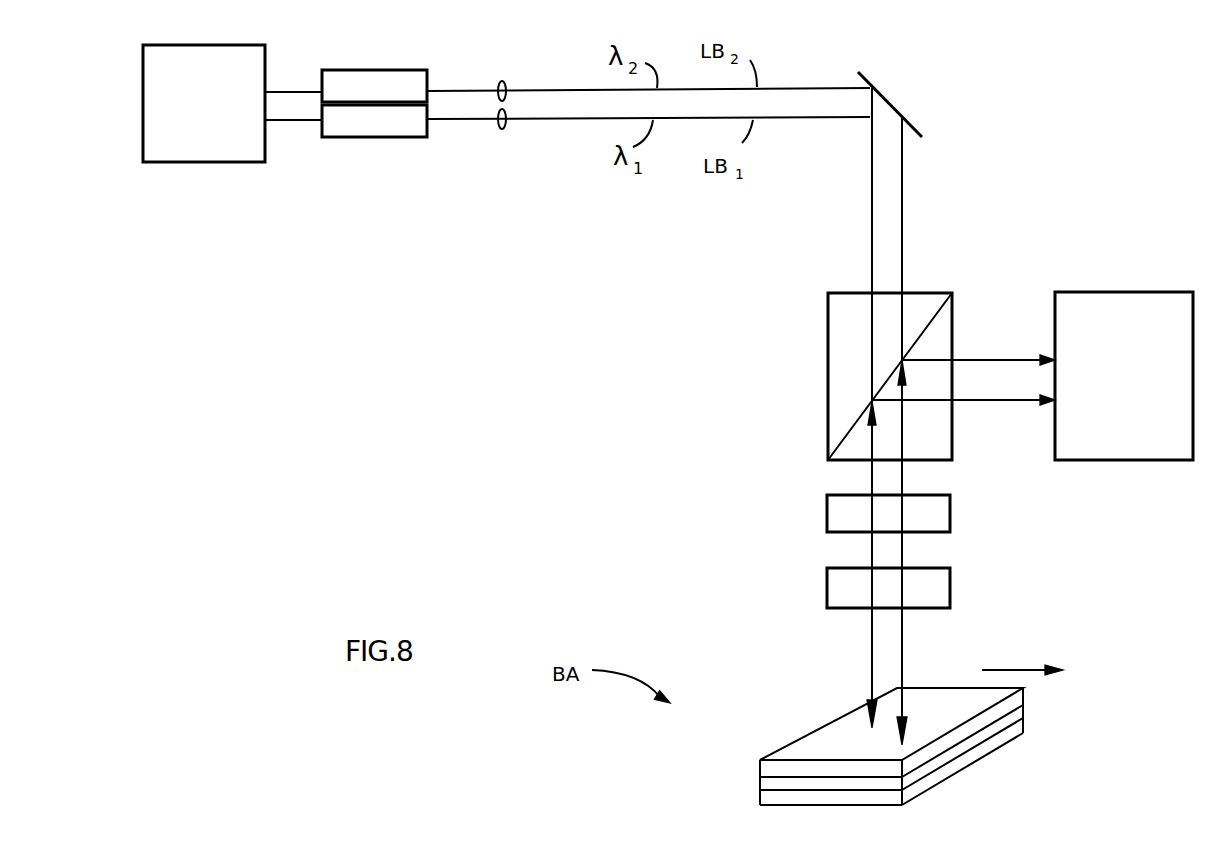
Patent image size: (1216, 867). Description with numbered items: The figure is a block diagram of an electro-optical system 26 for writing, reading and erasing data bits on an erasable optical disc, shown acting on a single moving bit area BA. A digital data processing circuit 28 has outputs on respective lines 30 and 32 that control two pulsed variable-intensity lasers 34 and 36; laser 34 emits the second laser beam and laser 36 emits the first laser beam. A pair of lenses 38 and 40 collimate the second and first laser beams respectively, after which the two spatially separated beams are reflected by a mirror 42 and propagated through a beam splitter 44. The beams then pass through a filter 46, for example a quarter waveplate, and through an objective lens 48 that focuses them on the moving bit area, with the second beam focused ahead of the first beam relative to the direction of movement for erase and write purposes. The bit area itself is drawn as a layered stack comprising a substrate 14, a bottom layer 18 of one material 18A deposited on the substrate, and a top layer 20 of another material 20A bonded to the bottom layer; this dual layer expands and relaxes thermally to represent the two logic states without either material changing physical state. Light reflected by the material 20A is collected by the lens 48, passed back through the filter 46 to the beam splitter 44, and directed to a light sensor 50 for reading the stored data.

The substrate 14 is at (760, 797).
The bottom layer 18 is at (760, 783).
The material of the bottom layer 18A is at (885, 782).
The top layer 20 is at (818, 737).
The material of the top layer 20A is at (888, 767).
The electro-optical system 26 is at (458, 279).
The digital data processing circuit 28 is at (143, 55).
The line 30 is at (303, 92).
The line 32 is at (293, 120).
The pulsed variable-intensity laser 34 is at (383, 70).
The pulsed variable-intensity laser 36 is at (385, 137).
The lens 38 is at (505, 82).
The lens 40 is at (505, 127).
The mirror 42 is at (890, 102).
The beam splitter 44 is at (828, 373).
The filter 46 is at (827, 517).
The objective lens 48 is at (827, 583).
The light sensor 50 is at (1142, 292).